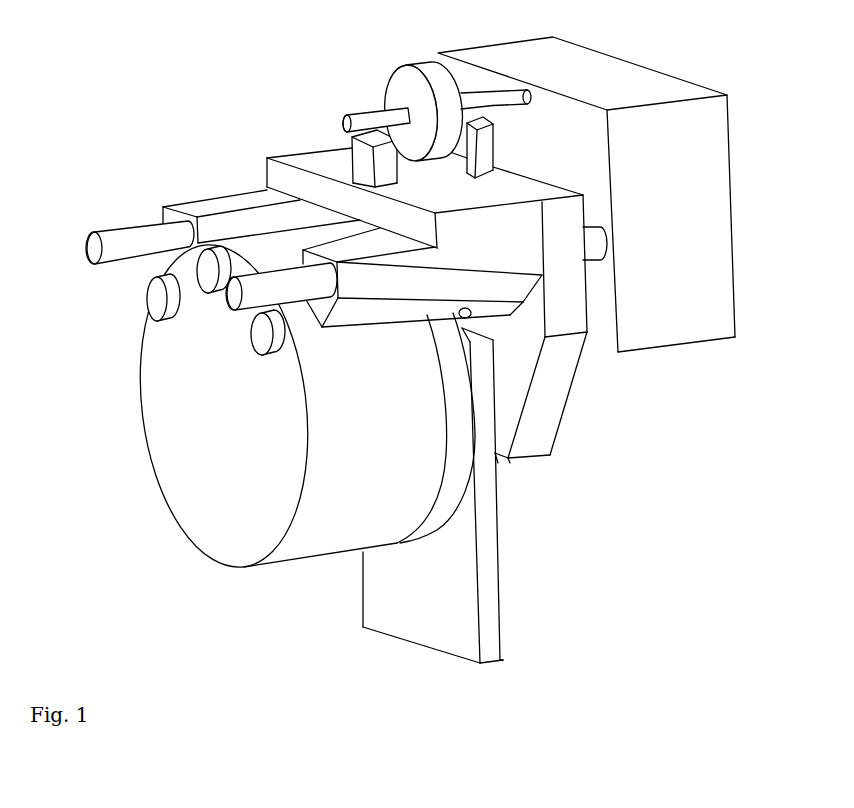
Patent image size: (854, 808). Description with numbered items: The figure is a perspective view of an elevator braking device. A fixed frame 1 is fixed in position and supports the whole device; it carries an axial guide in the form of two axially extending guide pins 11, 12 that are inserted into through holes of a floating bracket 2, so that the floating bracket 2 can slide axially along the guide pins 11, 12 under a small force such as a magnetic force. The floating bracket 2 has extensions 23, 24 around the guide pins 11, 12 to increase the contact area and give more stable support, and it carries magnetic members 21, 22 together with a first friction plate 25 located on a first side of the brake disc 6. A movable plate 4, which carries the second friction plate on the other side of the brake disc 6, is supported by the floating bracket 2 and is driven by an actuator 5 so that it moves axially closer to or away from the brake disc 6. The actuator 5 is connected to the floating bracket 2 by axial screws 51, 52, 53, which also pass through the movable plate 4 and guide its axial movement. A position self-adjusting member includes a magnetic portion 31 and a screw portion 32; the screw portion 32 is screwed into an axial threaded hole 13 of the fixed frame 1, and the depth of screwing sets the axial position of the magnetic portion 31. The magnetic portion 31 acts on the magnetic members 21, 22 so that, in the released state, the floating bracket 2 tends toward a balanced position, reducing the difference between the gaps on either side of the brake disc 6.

The fixed frame 1 is at (585, 70).
The floating bracket 2 is at (322, 162).
The movable plate 4 is at (458, 443).
The actuator 5 is at (327, 535).
The brake disc 6 is at (450, 568).
The guide pin 11 is at (130, 240).
The guide pin 12 is at (248, 292).
The axial threaded hole 13 is at (532, 100).
The magnetic member 21 is at (385, 165).
The magnetic member 22 is at (483, 165).
The extension 23 is at (230, 203).
The extension 24 is at (370, 273).
The first friction plate 25 is at (502, 382).
The magnetic portion 31 is at (395, 116).
The screw portion 32 is at (488, 93).
The axial screw 51 is at (162, 302).
The axial screw 52 is at (210, 275).
The axial screw 53 is at (257, 343).